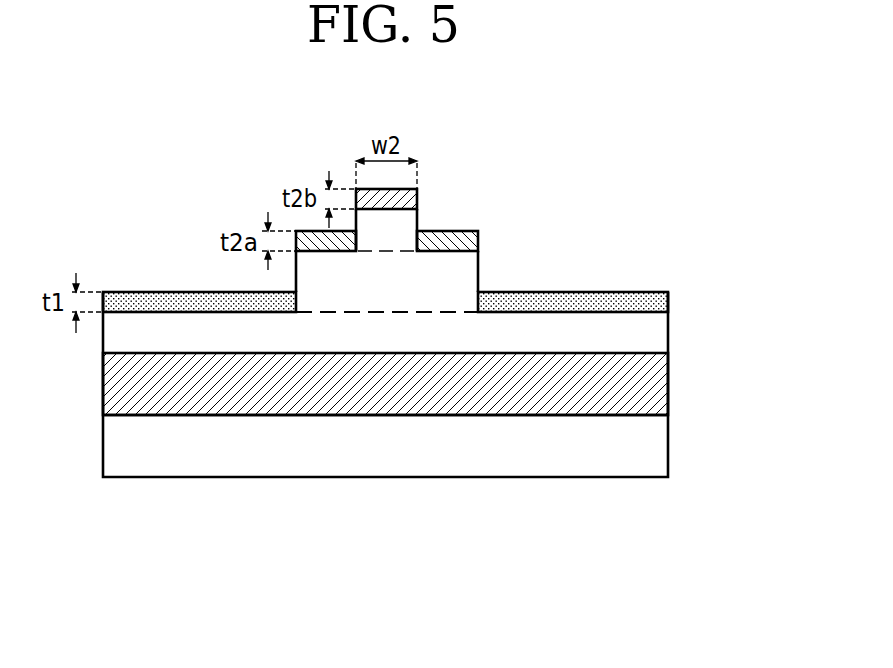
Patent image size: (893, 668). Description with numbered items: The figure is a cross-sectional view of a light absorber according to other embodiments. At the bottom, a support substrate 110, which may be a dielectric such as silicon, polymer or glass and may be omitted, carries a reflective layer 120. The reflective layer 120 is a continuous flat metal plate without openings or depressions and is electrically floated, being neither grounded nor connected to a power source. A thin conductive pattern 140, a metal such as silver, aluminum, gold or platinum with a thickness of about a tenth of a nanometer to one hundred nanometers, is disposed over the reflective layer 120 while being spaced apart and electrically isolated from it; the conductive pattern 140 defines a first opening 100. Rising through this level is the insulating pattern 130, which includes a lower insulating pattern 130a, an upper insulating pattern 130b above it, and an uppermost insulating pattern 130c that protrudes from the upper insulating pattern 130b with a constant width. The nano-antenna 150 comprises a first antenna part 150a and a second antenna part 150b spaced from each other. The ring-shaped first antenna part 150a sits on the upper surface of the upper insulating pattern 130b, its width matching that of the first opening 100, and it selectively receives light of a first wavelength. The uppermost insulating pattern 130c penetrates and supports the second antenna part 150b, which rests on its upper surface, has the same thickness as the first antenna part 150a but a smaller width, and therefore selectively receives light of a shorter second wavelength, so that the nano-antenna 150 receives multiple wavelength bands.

The first opening 100 is at (477, 302).
The support substrate 110 is at (660, 446).
The reflective layer 120 is at (660, 389).
The insulating pattern 130 is at (352, 400).
The lower insulating pattern 130a is at (250, 340).
The upper insulating pattern 130b is at (323, 293).
The uppermost insulating pattern 130c is at (402, 233).
The conductive pattern 140 is at (663, 303).
The nano-antenna 150 is at (471, 220).
The first antenna part 150a is at (472, 239).
The second antenna part 150b is at (407, 195).